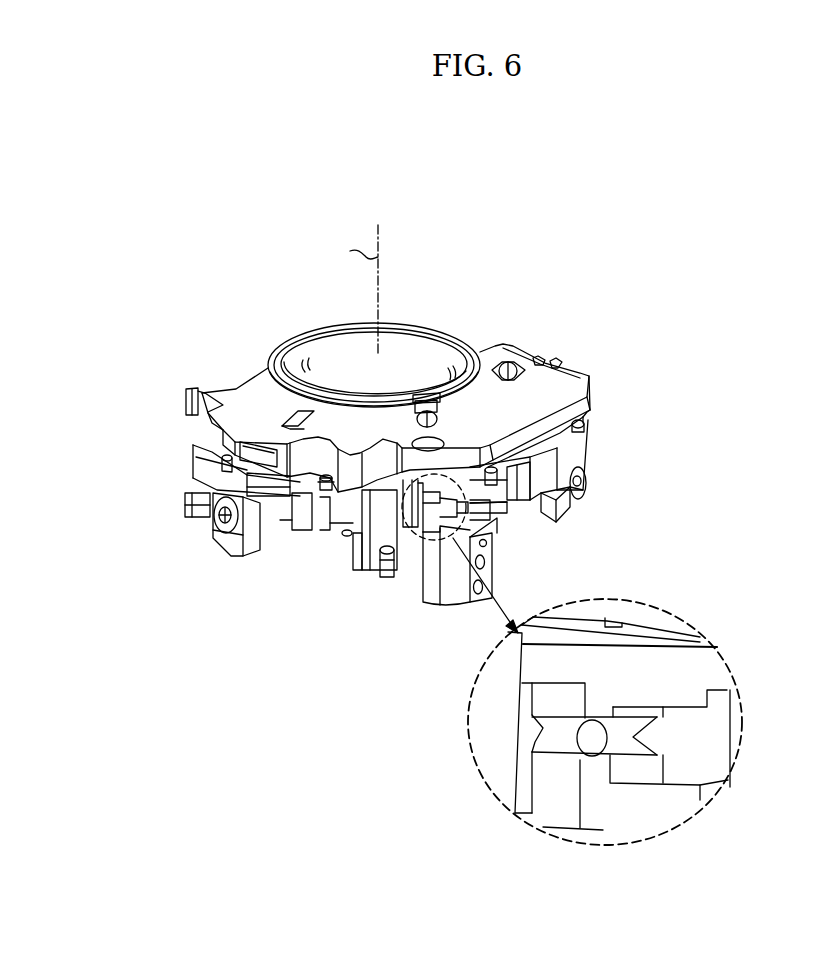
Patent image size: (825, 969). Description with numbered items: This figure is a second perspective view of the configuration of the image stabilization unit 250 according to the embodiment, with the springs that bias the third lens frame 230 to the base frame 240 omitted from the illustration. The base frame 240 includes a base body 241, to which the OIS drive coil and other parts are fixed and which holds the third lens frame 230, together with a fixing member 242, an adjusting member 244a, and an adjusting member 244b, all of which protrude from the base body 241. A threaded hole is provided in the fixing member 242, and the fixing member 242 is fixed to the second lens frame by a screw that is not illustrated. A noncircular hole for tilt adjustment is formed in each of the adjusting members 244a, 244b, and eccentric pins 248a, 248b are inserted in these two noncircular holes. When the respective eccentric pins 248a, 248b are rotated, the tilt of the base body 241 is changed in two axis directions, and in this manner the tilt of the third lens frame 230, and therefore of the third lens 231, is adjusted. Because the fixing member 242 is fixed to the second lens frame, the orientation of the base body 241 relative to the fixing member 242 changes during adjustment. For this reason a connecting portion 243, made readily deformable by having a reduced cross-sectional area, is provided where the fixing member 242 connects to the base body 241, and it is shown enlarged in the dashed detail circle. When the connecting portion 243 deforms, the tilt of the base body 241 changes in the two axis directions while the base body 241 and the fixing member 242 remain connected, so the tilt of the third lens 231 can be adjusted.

The image stabilization unit 250 is at (130, 265).
The third lens frame 230 is at (568, 390).
The third lens 231 is at (432, 360).
The base frame 240 is at (706, 428).
The base body 241 is at (585, 450).
The fixing member 242 is at (430, 590).
The connecting portion 243 is at (428, 510).
The adjusting member 244a is at (568, 508).
The adjusting member 244b is at (233, 543).
The eccentric pin 248a is at (583, 487).
The eccentric pin 248b is at (220, 513).